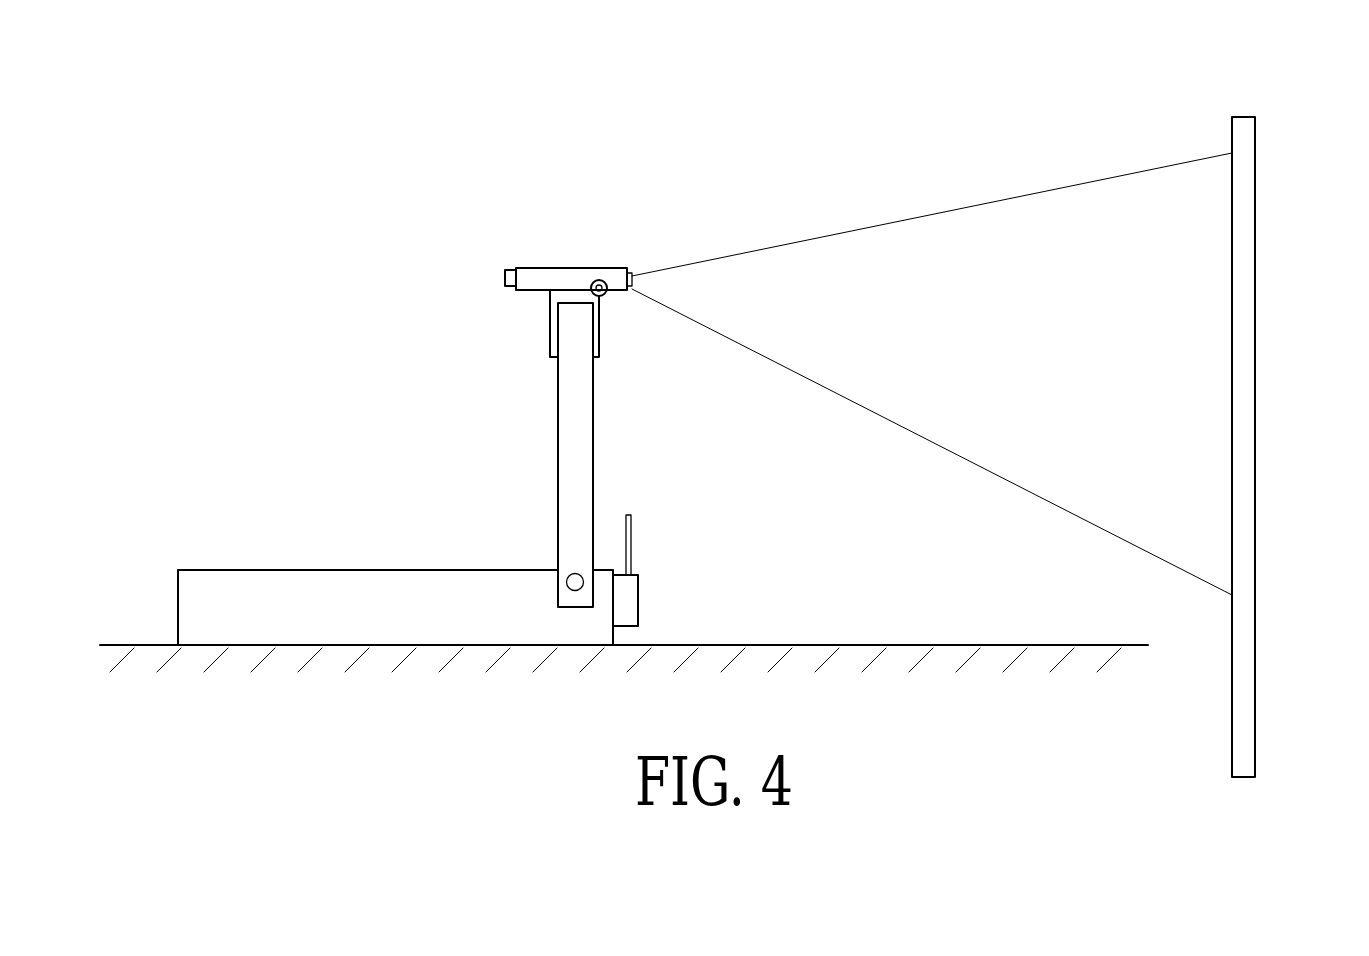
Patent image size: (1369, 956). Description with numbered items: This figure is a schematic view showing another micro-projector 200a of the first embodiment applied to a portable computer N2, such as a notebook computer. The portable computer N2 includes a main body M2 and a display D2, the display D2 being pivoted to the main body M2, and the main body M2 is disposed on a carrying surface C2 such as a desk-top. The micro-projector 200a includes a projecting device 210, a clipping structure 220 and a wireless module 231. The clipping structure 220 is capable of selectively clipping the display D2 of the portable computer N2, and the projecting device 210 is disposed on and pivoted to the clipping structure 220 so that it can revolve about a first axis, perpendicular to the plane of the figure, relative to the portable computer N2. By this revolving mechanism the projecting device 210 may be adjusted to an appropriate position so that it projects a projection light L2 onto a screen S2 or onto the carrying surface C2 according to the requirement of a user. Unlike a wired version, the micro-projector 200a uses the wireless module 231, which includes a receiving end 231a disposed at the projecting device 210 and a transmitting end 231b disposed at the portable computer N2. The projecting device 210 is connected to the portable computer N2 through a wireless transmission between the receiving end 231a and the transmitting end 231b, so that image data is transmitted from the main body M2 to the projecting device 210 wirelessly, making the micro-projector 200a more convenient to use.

The micro-projector 200a is at (641, 122).
The projecting device 210 is at (561, 276).
The clipping structure 220 is at (586, 296).
The wireless module 231 is at (522, 166).
The receiving end 231a is at (506, 268).
The transmitting end 231b is at (622, 580).
The portable computer N2 is at (330, 469).
The main body M2 is at (236, 582).
The display D2 is at (572, 552).
The carrying surface C2 is at (164, 628).
The projection light L2 is at (938, 177).
The screen S2 is at (1247, 128).